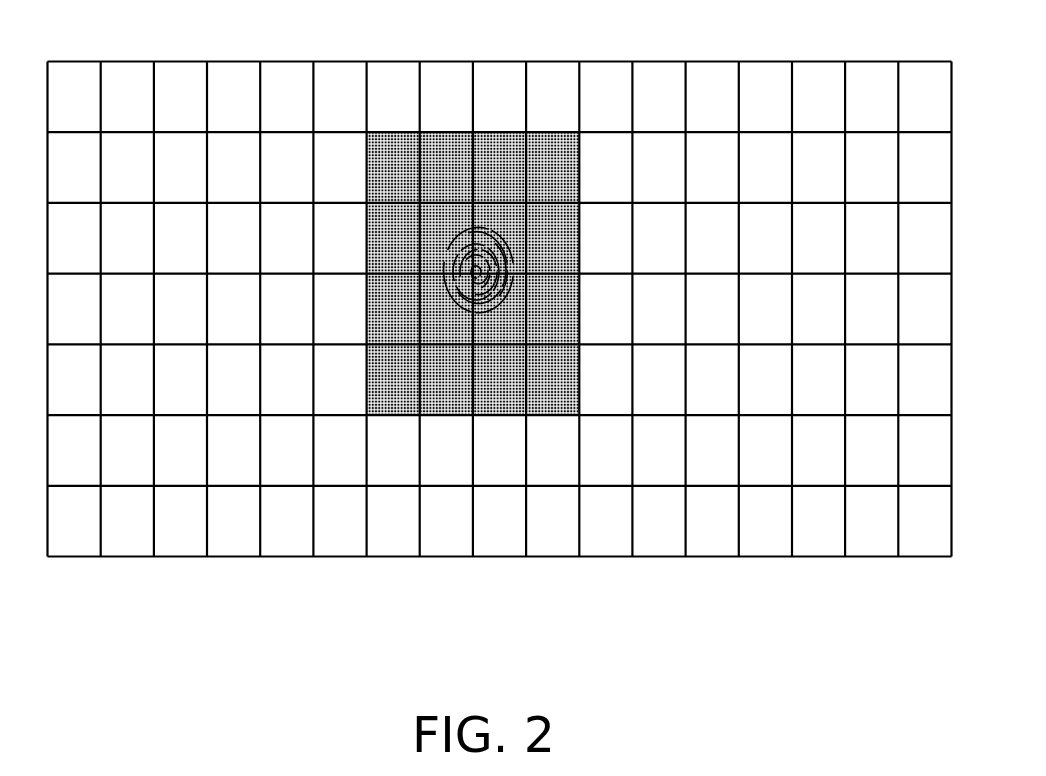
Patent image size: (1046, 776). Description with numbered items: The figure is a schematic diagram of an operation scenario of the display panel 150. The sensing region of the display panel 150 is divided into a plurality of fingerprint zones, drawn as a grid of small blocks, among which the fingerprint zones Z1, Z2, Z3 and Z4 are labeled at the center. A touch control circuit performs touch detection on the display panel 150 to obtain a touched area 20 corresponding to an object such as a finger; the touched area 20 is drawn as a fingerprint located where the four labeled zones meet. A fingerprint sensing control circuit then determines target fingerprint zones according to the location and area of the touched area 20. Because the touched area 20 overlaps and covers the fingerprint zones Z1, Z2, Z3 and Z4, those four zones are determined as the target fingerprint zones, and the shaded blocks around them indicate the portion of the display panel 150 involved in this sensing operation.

The touched area 20 is at (480, 232).
The display panel 150 is at (513, 591).
The fingerprint zone Z1 is at (446, 237).
The fingerprint zone Z2 is at (499, 237).
The fingerprint zone Z3 is at (446, 310).
The fingerprint zone Z4 is at (499, 310).